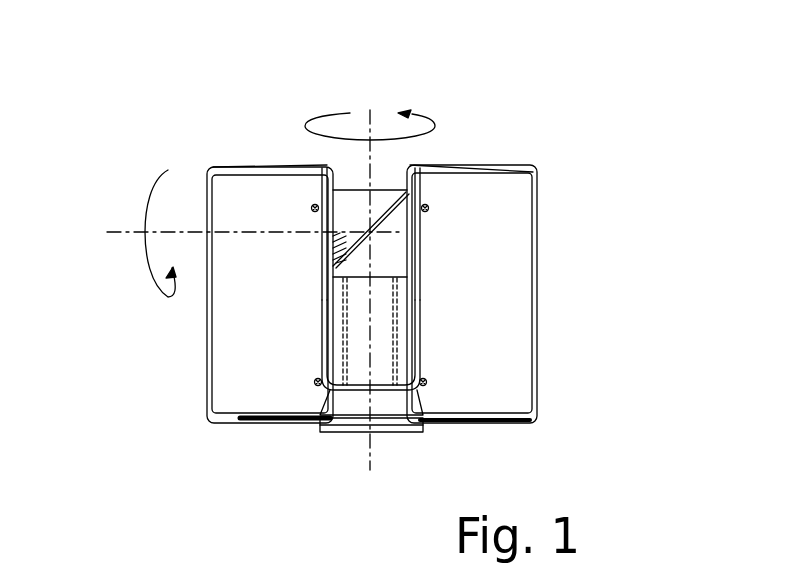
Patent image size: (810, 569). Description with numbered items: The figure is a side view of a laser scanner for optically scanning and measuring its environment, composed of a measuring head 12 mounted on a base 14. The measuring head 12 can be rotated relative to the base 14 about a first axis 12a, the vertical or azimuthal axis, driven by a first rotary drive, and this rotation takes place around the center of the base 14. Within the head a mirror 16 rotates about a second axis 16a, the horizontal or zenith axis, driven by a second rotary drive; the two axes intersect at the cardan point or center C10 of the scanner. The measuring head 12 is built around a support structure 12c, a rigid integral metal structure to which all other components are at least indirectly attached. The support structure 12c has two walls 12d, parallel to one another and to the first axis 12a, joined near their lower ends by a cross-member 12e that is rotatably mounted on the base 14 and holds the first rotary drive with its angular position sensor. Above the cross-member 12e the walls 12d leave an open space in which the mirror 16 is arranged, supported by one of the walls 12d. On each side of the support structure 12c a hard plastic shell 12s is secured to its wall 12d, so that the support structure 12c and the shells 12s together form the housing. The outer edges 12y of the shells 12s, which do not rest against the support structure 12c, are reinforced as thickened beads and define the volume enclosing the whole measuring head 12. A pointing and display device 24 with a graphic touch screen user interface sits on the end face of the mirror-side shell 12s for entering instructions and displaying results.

The pointing and display device 24 is at (198, 205).
The mirror 16 is at (397, 192).
The first axis 12a is at (371, 165).
The second axis 16a is at (123, 232).
The outer edges 12y is at (207, 298).
The measuring head 12 is at (207, 342).
The shell 12s is at (207, 387).
The walls 12d is at (418, 312).
The support structure 12c is at (422, 350).
The center C10 is at (370, 233).
The base 14 is at (357, 428).
The cross-member 12e is at (417, 425).